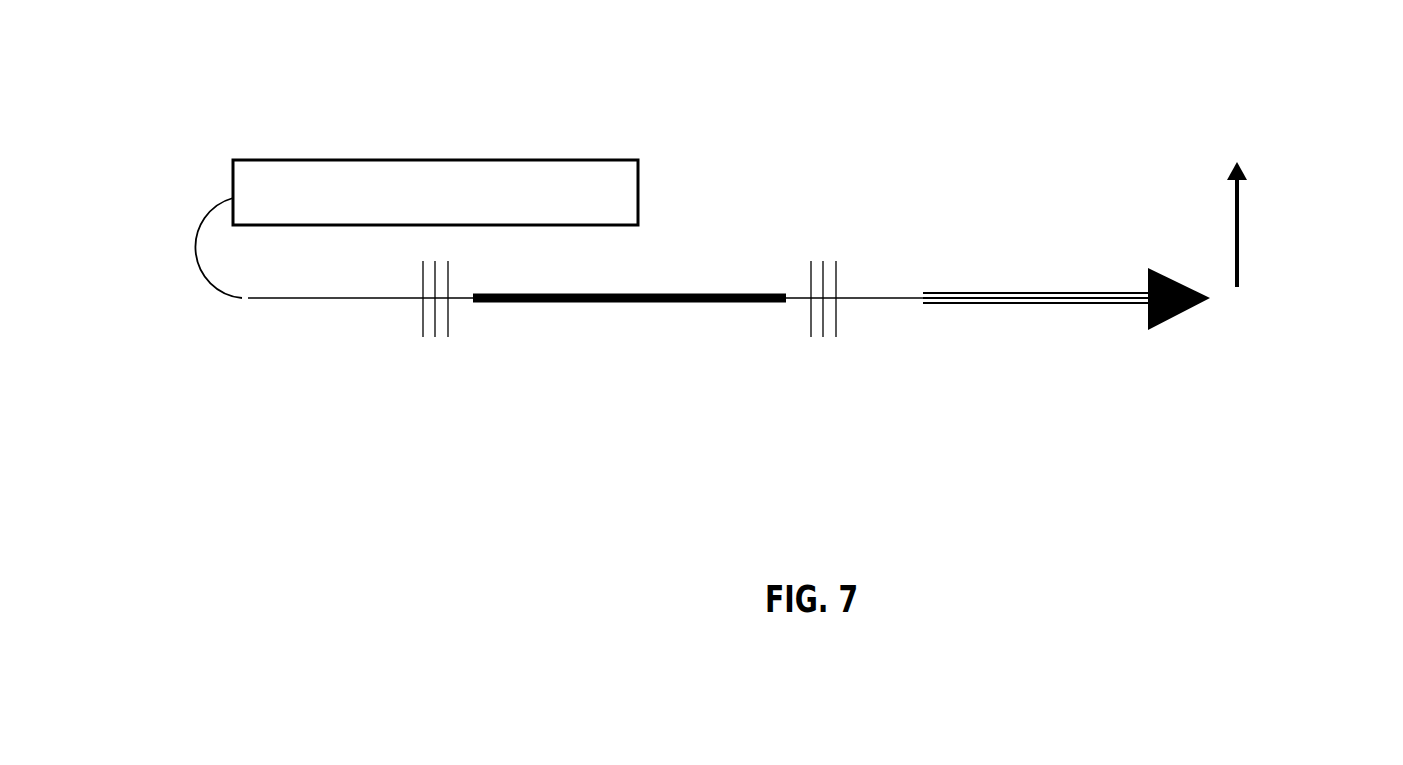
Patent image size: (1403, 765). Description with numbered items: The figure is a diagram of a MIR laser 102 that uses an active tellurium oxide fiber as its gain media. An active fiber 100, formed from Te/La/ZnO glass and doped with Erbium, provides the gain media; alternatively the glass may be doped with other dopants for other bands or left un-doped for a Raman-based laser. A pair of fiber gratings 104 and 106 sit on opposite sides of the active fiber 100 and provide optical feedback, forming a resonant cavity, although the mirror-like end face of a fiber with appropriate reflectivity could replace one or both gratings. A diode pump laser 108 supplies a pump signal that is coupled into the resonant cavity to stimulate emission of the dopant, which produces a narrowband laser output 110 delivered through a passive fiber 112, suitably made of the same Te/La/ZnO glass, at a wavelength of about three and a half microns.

The active fiber 100 is at (623, 320).
The MIR laser 102 is at (913, 121).
The fiber grating 104 is at (435, 356).
The fiber grating 106 is at (823, 345).
The diode pump laser 108 is at (413, 156).
The narrowband laser output 110 is at (1201, 217).
The passive fiber 112 is at (1048, 320).